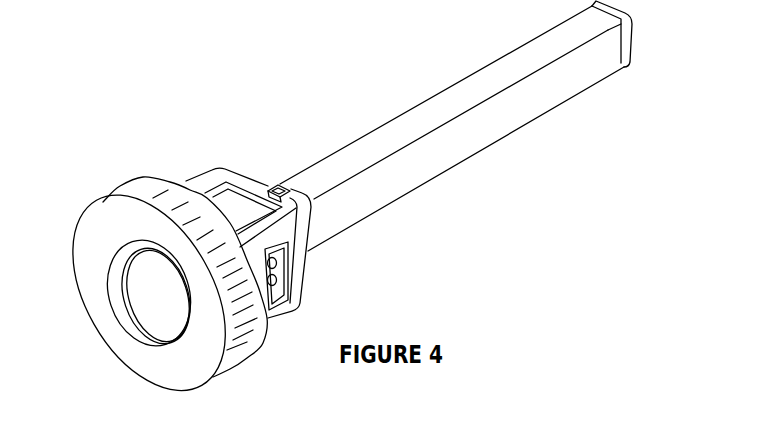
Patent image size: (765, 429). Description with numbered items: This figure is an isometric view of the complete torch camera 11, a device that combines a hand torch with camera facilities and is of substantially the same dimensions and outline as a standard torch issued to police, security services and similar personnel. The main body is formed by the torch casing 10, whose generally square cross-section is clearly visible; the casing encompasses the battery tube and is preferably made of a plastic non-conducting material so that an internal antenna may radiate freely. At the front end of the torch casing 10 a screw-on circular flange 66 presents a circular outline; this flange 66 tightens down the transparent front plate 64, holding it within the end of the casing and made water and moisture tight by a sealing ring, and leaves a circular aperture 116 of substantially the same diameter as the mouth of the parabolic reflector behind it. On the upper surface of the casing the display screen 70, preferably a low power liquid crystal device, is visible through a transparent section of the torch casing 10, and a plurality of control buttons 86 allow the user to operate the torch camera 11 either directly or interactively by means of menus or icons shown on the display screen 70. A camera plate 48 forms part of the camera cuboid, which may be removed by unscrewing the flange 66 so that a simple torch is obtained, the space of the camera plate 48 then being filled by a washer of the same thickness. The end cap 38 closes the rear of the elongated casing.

The torch casing 10 is at (413, 105).
The torch camera 11 is at (563, 210).
The end cap 38 is at (631, 43).
The camera plate 48 is at (281, 186).
The transparent front plate 64 is at (160, 287).
The screw-on circular flange 66 is at (142, 183).
The display screen 70 is at (236, 206).
The control buttons 86 is at (275, 280).
The circular aperture 116 is at (135, 335).